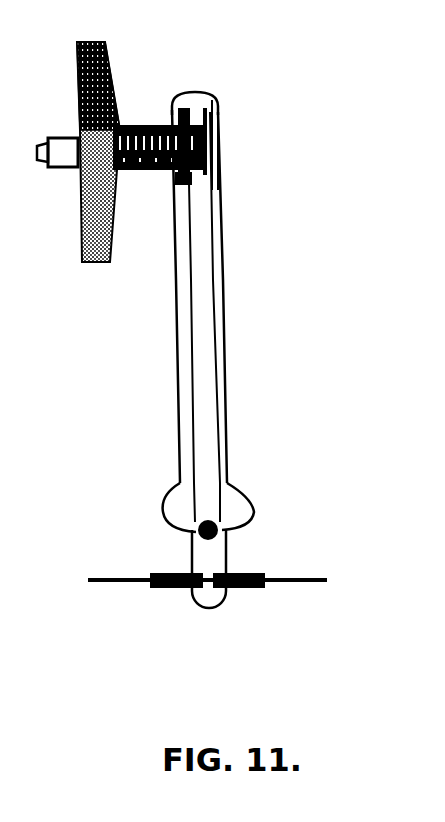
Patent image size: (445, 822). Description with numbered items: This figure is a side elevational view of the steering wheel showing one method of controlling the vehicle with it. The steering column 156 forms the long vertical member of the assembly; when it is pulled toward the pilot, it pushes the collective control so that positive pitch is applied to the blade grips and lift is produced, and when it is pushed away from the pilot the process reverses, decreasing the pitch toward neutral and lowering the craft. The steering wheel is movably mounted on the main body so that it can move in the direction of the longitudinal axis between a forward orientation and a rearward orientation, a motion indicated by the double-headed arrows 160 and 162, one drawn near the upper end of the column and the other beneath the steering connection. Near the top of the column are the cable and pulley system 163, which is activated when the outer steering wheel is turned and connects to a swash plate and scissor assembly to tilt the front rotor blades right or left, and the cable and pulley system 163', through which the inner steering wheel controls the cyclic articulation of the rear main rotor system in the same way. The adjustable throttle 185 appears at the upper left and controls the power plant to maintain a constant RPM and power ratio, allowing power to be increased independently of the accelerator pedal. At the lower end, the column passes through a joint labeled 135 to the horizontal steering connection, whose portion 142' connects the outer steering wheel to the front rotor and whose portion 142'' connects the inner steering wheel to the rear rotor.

The adjustable throttle 185 is at (37, 158).
The cable and pulley system 163 is at (165, 129).
The cable and pulley system 163' is at (259, 130).
The double-headed arrow 160 is at (147, 68).
The steering column 156 is at (165, 316).
The pivot joint 135 is at (178, 512).
The portion of steering connection 142' is at (247, 551).
The portion of steering connection 142'' is at (151, 597).
The double-headed arrow 162 is at (260, 628).